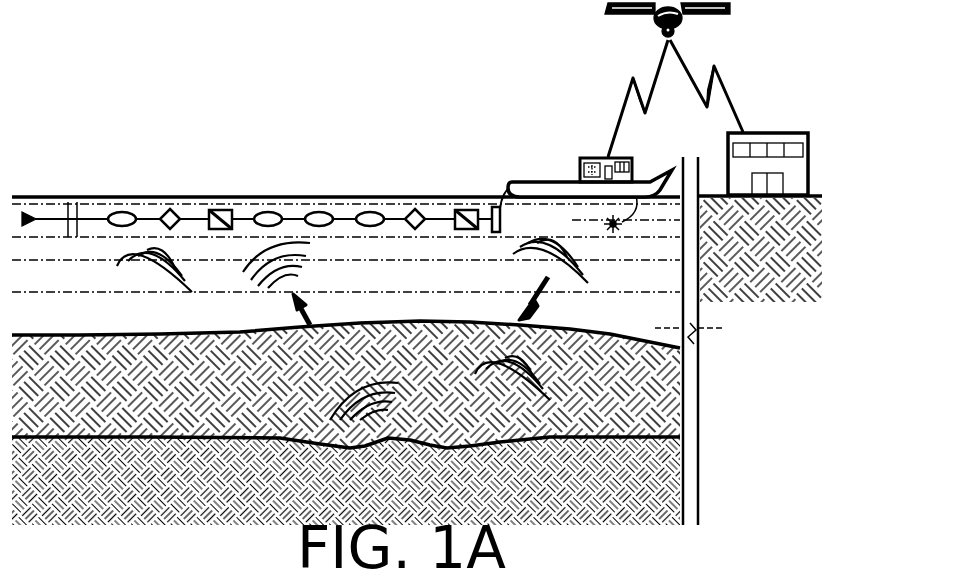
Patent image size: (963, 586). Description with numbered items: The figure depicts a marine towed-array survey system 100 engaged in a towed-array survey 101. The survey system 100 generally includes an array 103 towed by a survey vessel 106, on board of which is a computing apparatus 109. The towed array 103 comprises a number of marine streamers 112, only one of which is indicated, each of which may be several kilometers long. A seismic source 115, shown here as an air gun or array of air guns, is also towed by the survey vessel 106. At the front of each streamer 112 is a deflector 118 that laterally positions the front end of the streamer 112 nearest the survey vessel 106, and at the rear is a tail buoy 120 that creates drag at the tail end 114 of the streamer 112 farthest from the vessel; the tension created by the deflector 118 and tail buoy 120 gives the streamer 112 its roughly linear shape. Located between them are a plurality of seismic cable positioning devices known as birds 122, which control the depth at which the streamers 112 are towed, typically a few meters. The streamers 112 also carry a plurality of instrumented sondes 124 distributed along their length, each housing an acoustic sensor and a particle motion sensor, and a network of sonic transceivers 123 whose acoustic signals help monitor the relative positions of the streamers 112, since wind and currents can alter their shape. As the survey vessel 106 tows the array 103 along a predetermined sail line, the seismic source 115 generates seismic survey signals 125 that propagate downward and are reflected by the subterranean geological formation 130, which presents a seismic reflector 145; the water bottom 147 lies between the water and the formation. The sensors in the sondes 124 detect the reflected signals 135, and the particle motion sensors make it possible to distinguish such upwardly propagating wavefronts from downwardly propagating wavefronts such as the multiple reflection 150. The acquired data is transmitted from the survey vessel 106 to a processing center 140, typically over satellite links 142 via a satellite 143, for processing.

The towed-array survey system 100 is at (368, 106).
The towed-array survey 101 is at (98, 18).
The array 103 is at (110, 129).
The survey vessel 106 is at (655, 174).
The computing apparatus 109 is at (583, 158).
The marine streamer 112 is at (508, 190).
The tail end 114 is at (51, 216).
The seismic source 115 is at (622, 230).
The deflector 118 is at (500, 207).
The tail buoy 120 is at (26, 210).
The birds 122 is at (466, 209).
The sonic transceivers 123 is at (170, 208).
The instrumented sondes 124 is at (370, 211).
The seismic survey signals 125 is at (515, 279).
The subterranean geological formation 130 is at (294, 417).
The reflected signals 135 is at (322, 268).
The processing center 140 is at (782, 130).
The satellite links 142 is at (621, 111).
The satellite 143 is at (610, 8).
The seismic reflector 145 is at (554, 437).
The water bottom 147 is at (134, 335).
The multiple reflection 150 is at (118, 283).